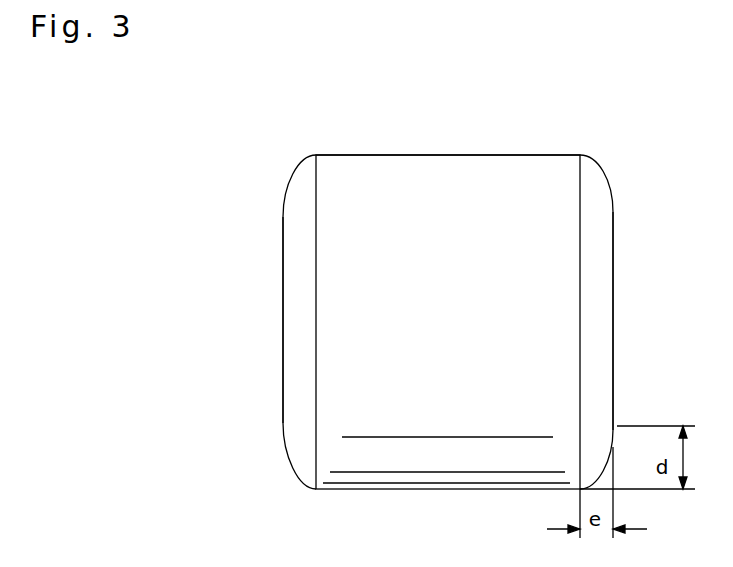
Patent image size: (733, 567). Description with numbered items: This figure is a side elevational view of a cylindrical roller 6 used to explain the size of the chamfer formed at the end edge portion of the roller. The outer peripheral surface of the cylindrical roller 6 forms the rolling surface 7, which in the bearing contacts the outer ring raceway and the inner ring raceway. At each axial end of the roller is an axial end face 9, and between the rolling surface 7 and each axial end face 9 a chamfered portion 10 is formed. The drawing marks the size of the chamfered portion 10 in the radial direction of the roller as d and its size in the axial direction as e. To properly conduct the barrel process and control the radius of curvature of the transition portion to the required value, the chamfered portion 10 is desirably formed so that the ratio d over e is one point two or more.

The cylindrical roller 6 is at (515, 177).
The rolling surface 7 is at (400, 190).
The axial end face 9 is at (283, 285).
The chamfered portion 10 is at (597, 188).